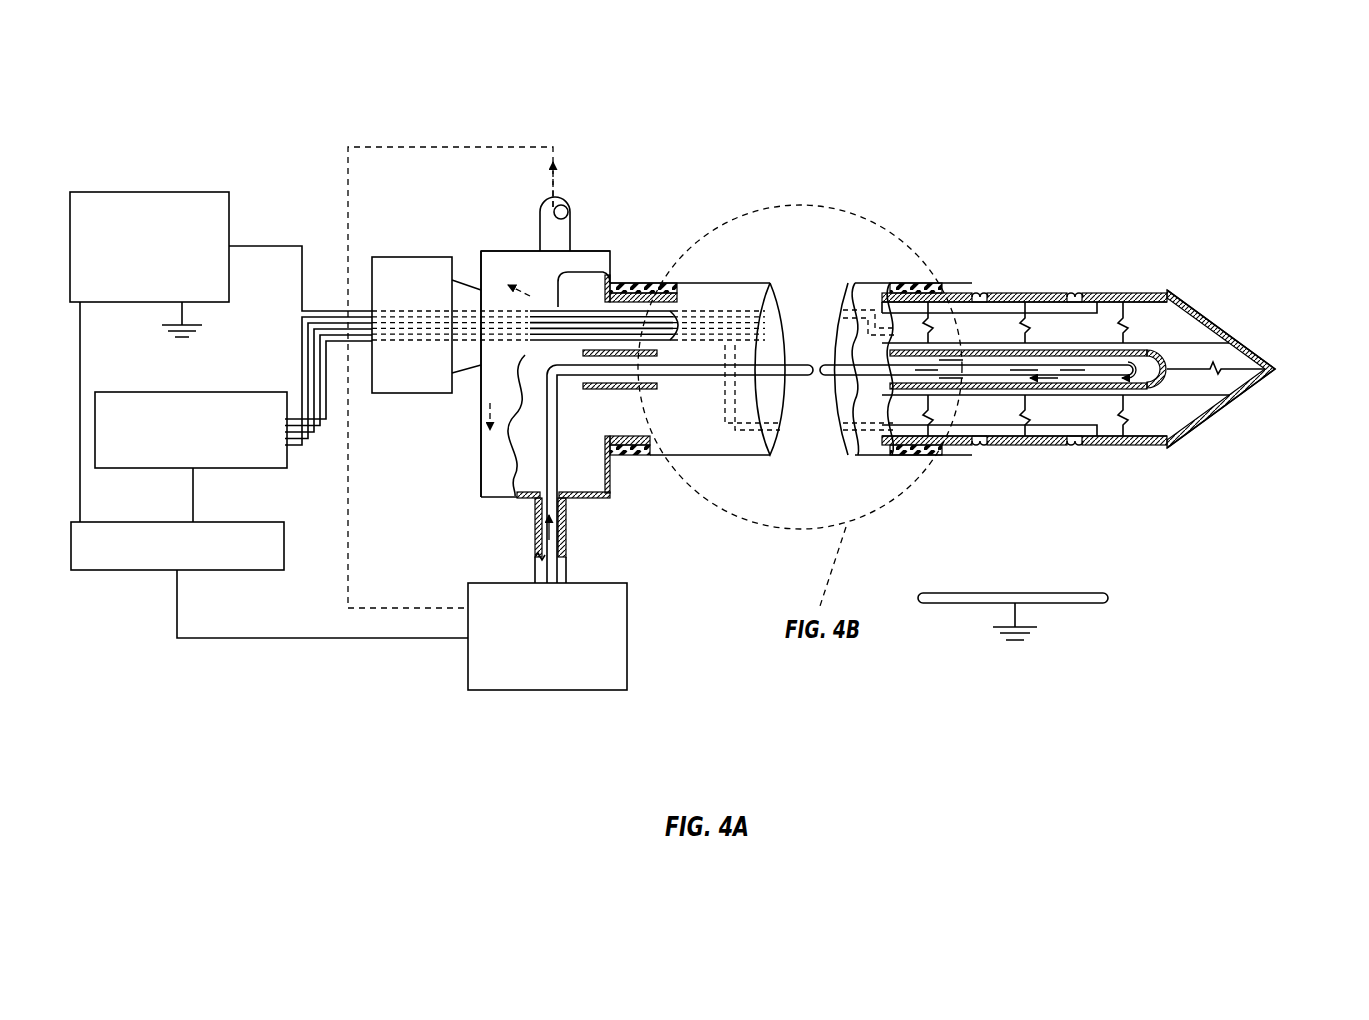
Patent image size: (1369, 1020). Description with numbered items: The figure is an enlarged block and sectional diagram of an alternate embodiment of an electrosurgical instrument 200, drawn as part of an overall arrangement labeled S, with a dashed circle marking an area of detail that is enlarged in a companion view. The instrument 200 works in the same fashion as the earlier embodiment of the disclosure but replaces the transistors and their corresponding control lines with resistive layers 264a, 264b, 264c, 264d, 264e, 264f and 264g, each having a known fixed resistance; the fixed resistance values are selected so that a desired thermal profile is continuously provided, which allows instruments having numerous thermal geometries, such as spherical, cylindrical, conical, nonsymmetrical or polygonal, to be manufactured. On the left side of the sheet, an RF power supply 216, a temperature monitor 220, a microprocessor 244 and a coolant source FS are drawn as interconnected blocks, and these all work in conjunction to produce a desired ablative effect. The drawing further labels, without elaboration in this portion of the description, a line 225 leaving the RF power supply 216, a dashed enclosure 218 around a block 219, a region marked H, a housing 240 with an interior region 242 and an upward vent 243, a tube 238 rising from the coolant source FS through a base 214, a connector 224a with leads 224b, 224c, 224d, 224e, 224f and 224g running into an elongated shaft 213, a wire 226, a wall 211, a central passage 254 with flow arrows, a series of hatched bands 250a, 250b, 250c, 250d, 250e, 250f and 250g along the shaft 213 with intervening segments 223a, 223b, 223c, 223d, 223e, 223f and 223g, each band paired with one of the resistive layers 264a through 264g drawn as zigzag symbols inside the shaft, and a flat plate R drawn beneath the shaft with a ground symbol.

The electrosurgical instrument 200 is at (958, 152).
The shaft inner lumen wall 211 is at (1080, 300).
The shaft 213 is at (925, 290).
The housing coolant inlet base 214 is at (580, 500).
The RF power supply 216 is at (105, 192).
The handle 218 is at (425, 257).
The cable connector block 219 is at (467, 283).
The temperature monitor 220 is at (165, 392).
The insulator 223a is at (880, 283).
The insulator 223b is at (983, 293).
The insulator 223c is at (1113, 293).
The insulator tip 223d is at (1262, 364).
The insulator 223e is at (1112, 446).
The insulator 223f is at (1012, 446).
The insulator 223g is at (900, 458).
The cable connector 224a is at (618, 290).
The electrode lead wire 224b is at (670, 300).
The electrode lead wire 224c is at (698, 330).
The electrode lead wire 224d is at (735, 345).
The electrode lead wire 224e is at (646, 318).
The electrode lead wire 224f is at (652, 330).
The electrode lead wire 224g is at (654, 345).
The RF power line 225 is at (300, 246).
The thermocouple wire 226 is at (833, 378).
The coolant inlet tube 238 is at (550, 540).
The housing 240 is at (540, 212).
The coolant chamber 242 is at (486, 412).
The vent 243 is at (553, 195).
The microprocessor 244 is at (168, 522).
The electrode 250a is at (960, 293).
The electrode 250b is at (1047, 293).
The electrode 250c is at (1150, 293).
The tip electrode 250d is at (1207, 322).
The electrode 250e is at (1150, 446).
The electrode 250f is at (1045, 446).
The electrode 250g is at (950, 446).
The coolant lumen 254 is at (1229, 372).
The resistive layer 264a is at (900, 335).
The resistive layer 264b is at (1022, 302).
The resistive layer 264c is at (1172, 301).
The resistive layer 264d is at (1242, 386).
The resistive layer 264e is at (1170, 440).
The resistive layer 264f is at (1062, 437).
The resistive layer 264g is at (992, 437).
The handle assembly H is at (584, 221).
The system S is at (96, 627).
The coolant source FS is at (634, 621).
The return electrode R is at (1108, 600).